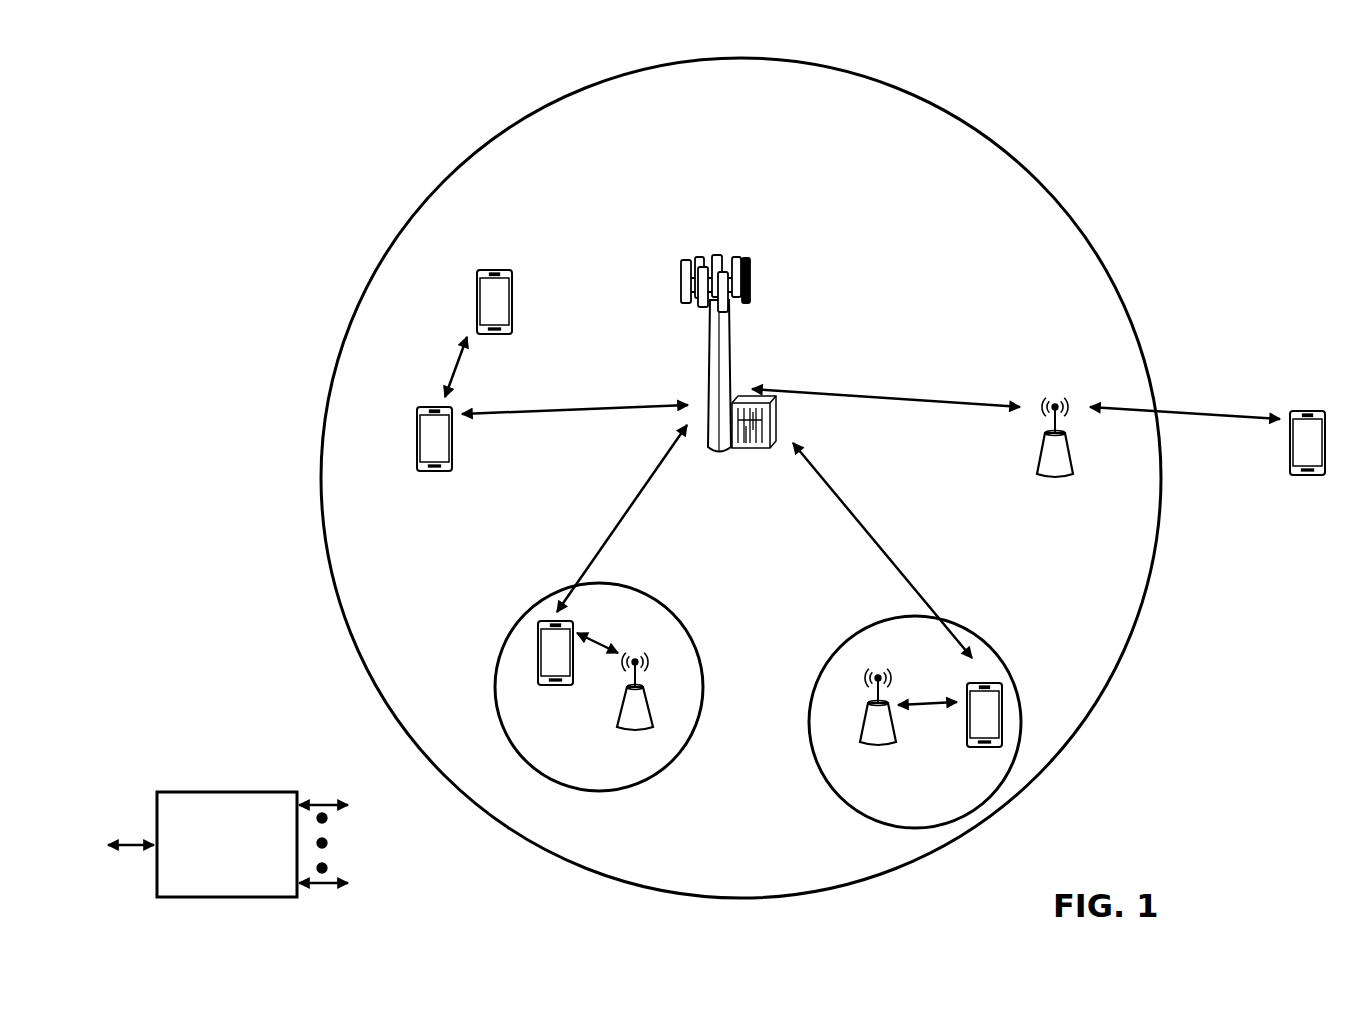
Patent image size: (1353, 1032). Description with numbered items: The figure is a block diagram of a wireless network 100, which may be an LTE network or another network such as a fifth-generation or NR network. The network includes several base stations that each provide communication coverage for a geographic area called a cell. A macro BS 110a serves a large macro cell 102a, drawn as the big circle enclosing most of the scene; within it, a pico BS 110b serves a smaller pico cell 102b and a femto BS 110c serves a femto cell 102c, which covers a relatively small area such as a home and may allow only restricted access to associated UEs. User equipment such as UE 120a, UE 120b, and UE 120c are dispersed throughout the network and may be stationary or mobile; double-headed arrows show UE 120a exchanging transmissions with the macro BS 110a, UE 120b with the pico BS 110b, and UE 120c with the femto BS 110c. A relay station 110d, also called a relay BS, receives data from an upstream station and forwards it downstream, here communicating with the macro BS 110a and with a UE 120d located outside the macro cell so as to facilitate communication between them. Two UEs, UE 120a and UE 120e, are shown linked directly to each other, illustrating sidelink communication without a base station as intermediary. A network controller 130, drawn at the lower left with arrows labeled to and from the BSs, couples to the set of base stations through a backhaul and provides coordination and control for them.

The wireless network 100 is at (210, 52).
The macro cell 102a is at (1018, 170).
The pico cell 102b is at (692, 626).
The femto cell 102c is at (848, 635).
The macro BS 110a is at (728, 252).
The pico BS 110b is at (655, 718).
The femto BS 110c is at (866, 732).
The relay station 110d is at (1057, 398).
The UE 120a is at (417, 438).
The UE 120b is at (544, 688).
The UE 120c is at (972, 749).
The UE 120d is at (1322, 410).
The UE 120e is at (476, 290).
The network controller 130 is at (226, 792).